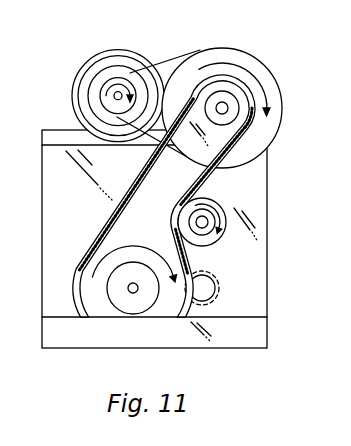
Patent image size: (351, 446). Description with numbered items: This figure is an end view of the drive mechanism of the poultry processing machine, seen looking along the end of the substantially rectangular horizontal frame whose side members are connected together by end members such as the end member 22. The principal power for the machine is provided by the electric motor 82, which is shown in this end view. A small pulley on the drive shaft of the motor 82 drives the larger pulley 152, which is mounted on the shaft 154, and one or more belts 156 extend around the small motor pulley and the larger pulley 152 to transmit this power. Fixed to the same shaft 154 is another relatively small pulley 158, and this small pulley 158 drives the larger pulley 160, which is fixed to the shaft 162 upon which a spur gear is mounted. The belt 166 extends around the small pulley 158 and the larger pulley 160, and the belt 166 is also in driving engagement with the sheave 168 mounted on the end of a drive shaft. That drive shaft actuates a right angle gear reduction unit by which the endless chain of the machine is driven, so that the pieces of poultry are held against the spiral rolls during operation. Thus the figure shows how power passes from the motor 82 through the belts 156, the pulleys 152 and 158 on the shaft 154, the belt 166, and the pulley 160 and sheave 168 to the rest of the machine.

The end member 22 is at (42, 246).
The electric motor 82 is at (129, 51).
The larger pulley 152 is at (246, 53).
The shaft 154 is at (227, 104).
The belts 156 is at (175, 58).
The small pulley 158 is at (254, 119).
The larger pulley 160 is at (147, 233).
The shaft 162 is at (131, 293).
The belt 166 is at (108, 219).
The sheave 168 is at (215, 202).